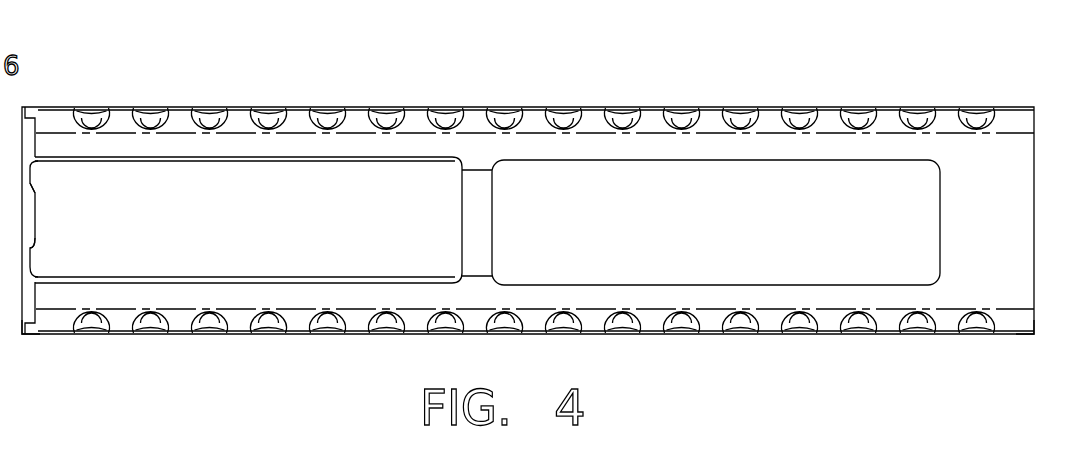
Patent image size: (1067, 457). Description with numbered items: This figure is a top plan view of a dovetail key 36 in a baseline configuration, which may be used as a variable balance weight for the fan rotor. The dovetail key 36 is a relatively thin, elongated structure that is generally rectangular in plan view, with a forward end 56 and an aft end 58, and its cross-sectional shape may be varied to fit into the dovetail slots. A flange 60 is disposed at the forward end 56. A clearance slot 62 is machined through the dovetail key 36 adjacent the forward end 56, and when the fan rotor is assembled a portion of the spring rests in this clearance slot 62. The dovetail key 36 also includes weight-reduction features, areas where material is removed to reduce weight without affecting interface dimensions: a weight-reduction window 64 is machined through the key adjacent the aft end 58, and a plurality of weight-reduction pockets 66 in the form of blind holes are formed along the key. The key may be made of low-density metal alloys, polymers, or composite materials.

The dovetail key 36 is at (522, 96).
The forward end 56 is at (22, 332).
The aft end 58 is at (1034, 327).
The flange 60 is at (27, 260).
The clearance slot 62 is at (272, 162).
The weight-reduction window 64 is at (688, 160).
The weight-reduction pockets 66 is at (670, 109).